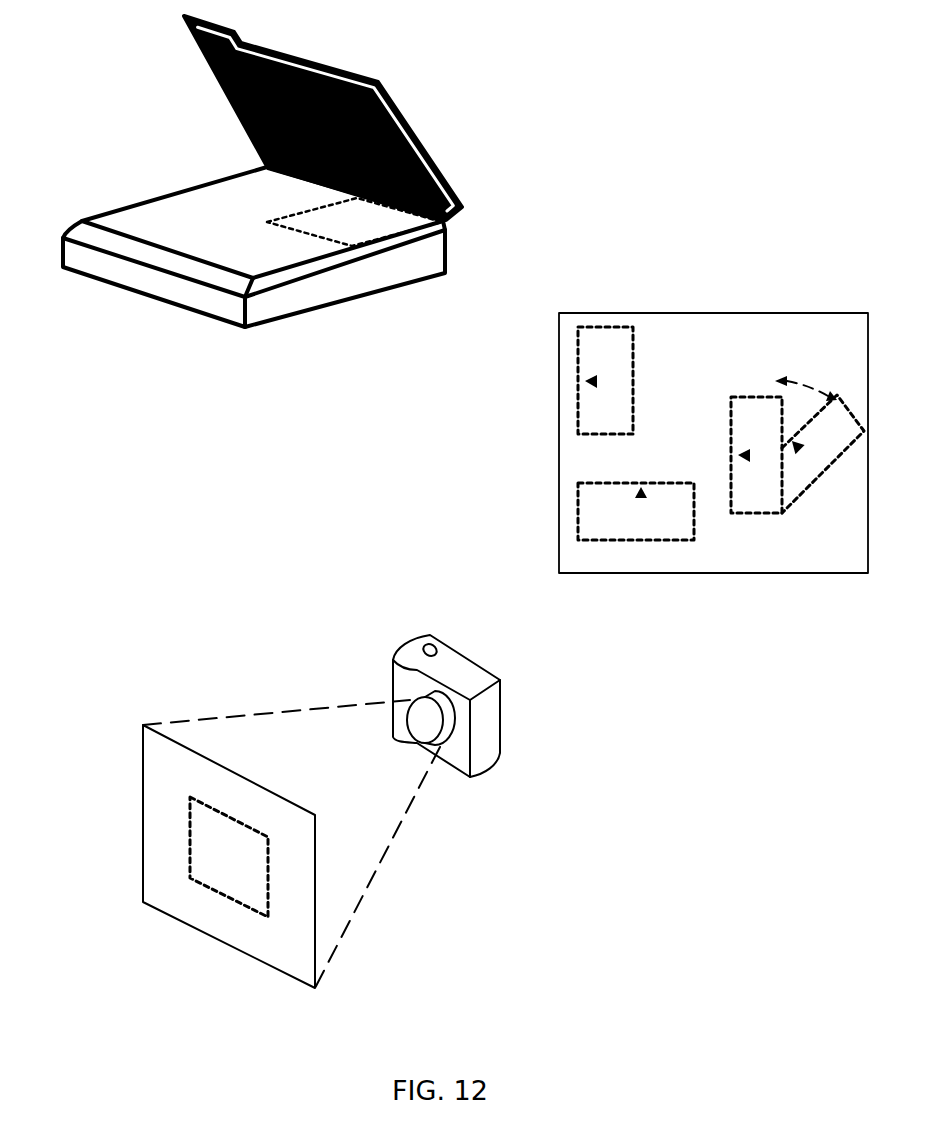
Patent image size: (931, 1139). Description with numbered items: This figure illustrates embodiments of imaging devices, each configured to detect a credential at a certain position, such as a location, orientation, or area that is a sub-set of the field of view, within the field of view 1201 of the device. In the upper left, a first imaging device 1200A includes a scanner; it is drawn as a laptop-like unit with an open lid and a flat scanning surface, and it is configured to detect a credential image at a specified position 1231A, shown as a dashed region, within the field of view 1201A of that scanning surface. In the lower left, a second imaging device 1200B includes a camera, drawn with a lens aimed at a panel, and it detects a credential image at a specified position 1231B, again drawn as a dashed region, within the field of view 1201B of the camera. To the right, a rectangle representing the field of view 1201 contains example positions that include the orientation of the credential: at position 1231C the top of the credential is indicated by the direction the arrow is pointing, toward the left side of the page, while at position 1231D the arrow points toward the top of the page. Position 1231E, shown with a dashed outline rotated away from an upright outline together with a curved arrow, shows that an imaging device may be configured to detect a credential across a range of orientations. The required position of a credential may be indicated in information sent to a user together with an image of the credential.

The first imaging device 1200A is at (184, 22).
The field of view of a scanning surface 1201A is at (212, 195).
The specified position 1231A is at (332, 242).
The field of view 1201 is at (558, 405).
The position 1231C is at (607, 327).
The position 1231D is at (578, 505).
The position 1231E is at (760, 360).
The second imaging device 1200B is at (393, 660).
The field of view of the camera 1201B is at (143, 748).
The specified position 1231B is at (228, 897).